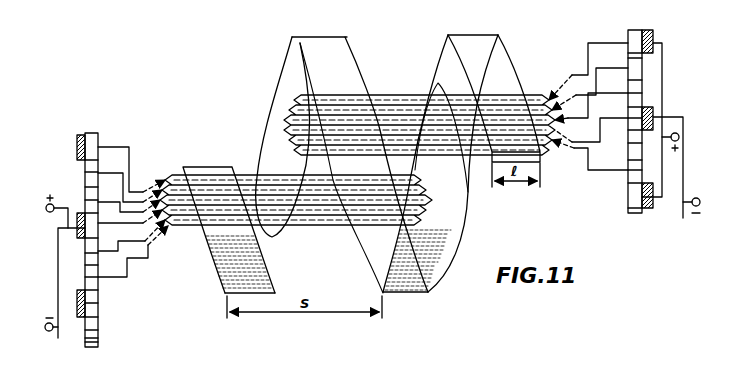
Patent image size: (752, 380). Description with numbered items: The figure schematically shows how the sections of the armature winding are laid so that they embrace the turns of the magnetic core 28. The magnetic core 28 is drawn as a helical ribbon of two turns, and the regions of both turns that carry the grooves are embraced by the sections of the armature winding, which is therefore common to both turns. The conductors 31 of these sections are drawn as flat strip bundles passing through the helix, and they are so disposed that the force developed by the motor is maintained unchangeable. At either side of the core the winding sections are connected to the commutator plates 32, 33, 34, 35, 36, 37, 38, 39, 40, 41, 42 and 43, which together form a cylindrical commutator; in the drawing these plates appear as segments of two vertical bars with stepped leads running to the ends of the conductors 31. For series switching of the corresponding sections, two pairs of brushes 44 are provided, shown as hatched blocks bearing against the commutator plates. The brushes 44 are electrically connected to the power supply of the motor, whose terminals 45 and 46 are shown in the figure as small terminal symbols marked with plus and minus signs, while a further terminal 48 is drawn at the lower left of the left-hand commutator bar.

The magnetic core 28 is at (290, 56).
The conductors 31 is at (389, 96).
The commutator plate 32 is at (93, 133).
The commutator plate 33 is at (85, 165).
The commutator plate 34 is at (85, 190).
The commutator plate 35 is at (98, 233).
The commutator plate 36 is at (85, 254).
The commutator plate 37 is at (85, 275).
The commutator plate 38 is at (634, 30).
The commutator plate 39 is at (98, 338).
The commutator plate 40 is at (628, 82).
The commutator plate 41 is at (628, 107).
The commutator plate 42 is at (628, 130).
The commutator plate 43 is at (628, 155).
The brushes 44 is at (80, 134).
The terminal 45 is at (687, 134).
The terminal 46 is at (696, 198).
The negative terminal 48 is at (46, 336).